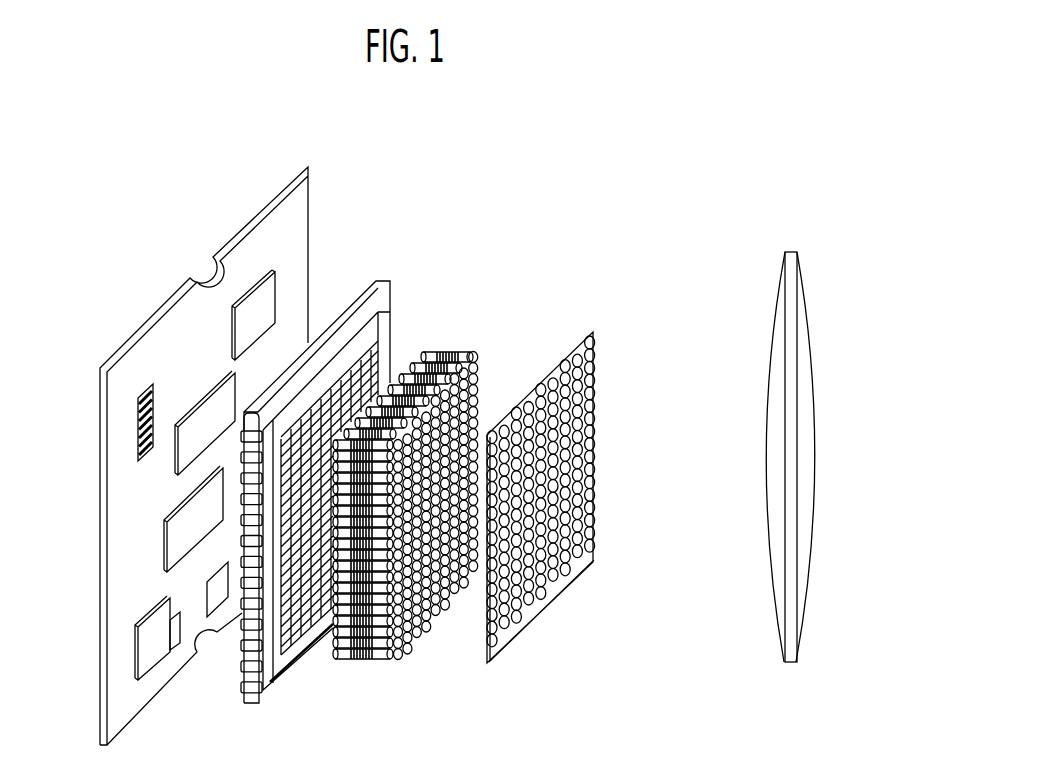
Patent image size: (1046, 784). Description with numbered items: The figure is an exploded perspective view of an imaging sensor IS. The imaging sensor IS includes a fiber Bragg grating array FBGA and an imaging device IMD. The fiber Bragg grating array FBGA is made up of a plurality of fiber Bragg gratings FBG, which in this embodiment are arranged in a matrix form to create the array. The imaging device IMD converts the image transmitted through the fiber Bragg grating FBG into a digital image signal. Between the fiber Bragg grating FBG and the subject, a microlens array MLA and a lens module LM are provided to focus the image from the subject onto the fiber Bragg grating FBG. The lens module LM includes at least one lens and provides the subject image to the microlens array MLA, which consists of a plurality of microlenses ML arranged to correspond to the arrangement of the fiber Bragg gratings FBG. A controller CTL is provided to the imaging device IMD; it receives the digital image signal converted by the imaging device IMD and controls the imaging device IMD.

The imaging sensor IS is at (678, 170).
The controller CTL is at (303, 224).
The imaging device IMD is at (389, 330).
The fiber Bragg grating array FBGA is at (471, 324).
The fiber Bragg grating FBG is at (422, 622).
The microlens array MLA is at (590, 317).
The microlens ML is at (590, 565).
The lens module LM is at (790, 252).